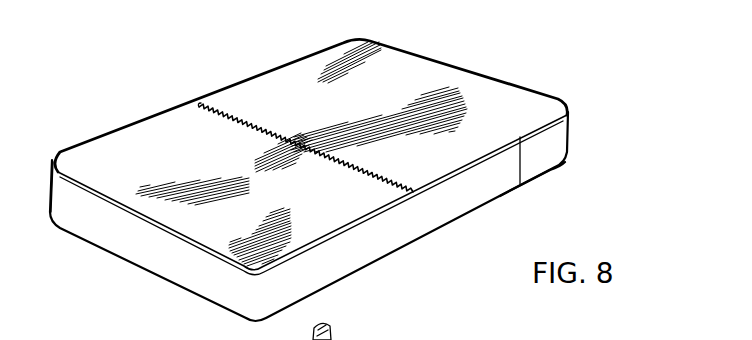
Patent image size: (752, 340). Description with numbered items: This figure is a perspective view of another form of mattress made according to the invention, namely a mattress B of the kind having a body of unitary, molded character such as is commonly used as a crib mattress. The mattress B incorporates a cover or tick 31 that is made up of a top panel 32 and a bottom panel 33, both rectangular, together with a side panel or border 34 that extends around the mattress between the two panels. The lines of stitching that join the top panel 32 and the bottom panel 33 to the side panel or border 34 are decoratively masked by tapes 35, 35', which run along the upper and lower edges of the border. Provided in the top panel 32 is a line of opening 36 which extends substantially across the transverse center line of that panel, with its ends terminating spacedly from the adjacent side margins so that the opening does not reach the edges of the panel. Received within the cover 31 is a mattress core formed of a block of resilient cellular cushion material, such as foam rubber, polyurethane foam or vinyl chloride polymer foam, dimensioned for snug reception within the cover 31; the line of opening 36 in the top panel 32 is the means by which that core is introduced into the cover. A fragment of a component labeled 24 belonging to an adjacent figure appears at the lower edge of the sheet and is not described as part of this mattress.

The mattress B is at (147, 110).
The cover or tick 31 is at (293, 62).
The top panel 32 is at (527, 102).
The bottom panel 33 is at (495, 200).
The side panel or border 34 is at (450, 203).
The tape 35 is at (343, 198).
The tape 35' is at (566, 179).
The line of opening 36 is at (240, 117).
The element of adjacent figure 24 is at (353, 339).